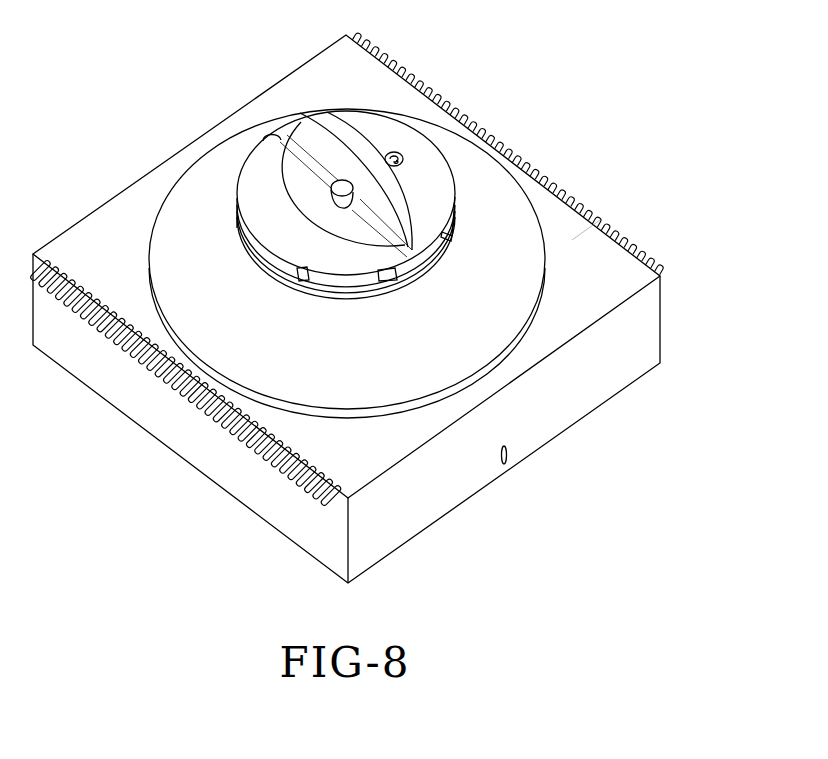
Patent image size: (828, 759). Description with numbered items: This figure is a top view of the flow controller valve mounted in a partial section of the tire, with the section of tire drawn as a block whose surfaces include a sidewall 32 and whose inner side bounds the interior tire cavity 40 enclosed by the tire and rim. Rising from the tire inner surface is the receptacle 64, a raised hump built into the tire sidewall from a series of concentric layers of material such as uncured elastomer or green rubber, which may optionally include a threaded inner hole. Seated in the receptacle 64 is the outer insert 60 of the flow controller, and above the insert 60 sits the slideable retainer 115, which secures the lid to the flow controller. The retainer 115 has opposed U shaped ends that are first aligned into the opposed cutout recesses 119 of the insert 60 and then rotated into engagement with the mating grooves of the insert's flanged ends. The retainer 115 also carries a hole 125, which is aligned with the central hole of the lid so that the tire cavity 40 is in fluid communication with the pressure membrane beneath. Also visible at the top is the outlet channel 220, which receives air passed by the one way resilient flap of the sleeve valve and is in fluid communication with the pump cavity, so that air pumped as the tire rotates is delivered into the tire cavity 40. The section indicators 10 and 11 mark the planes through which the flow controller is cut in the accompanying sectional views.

The section line 10- 10 is at (158, 166).
The section line 11- 11 is at (535, 175).
The interior tire cavity 40 is at (197, 81).
The receptacle 64 is at (386, 351).
The outer insert 60 is at (273, 261).
The slideable retainer 115 is at (427, 158).
The hole 125 is at (333, 190).
The outlet channel 220 is at (399, 153).
The cutout recess 119 is at (331, 279).
The sidewall 32 is at (564, 243).